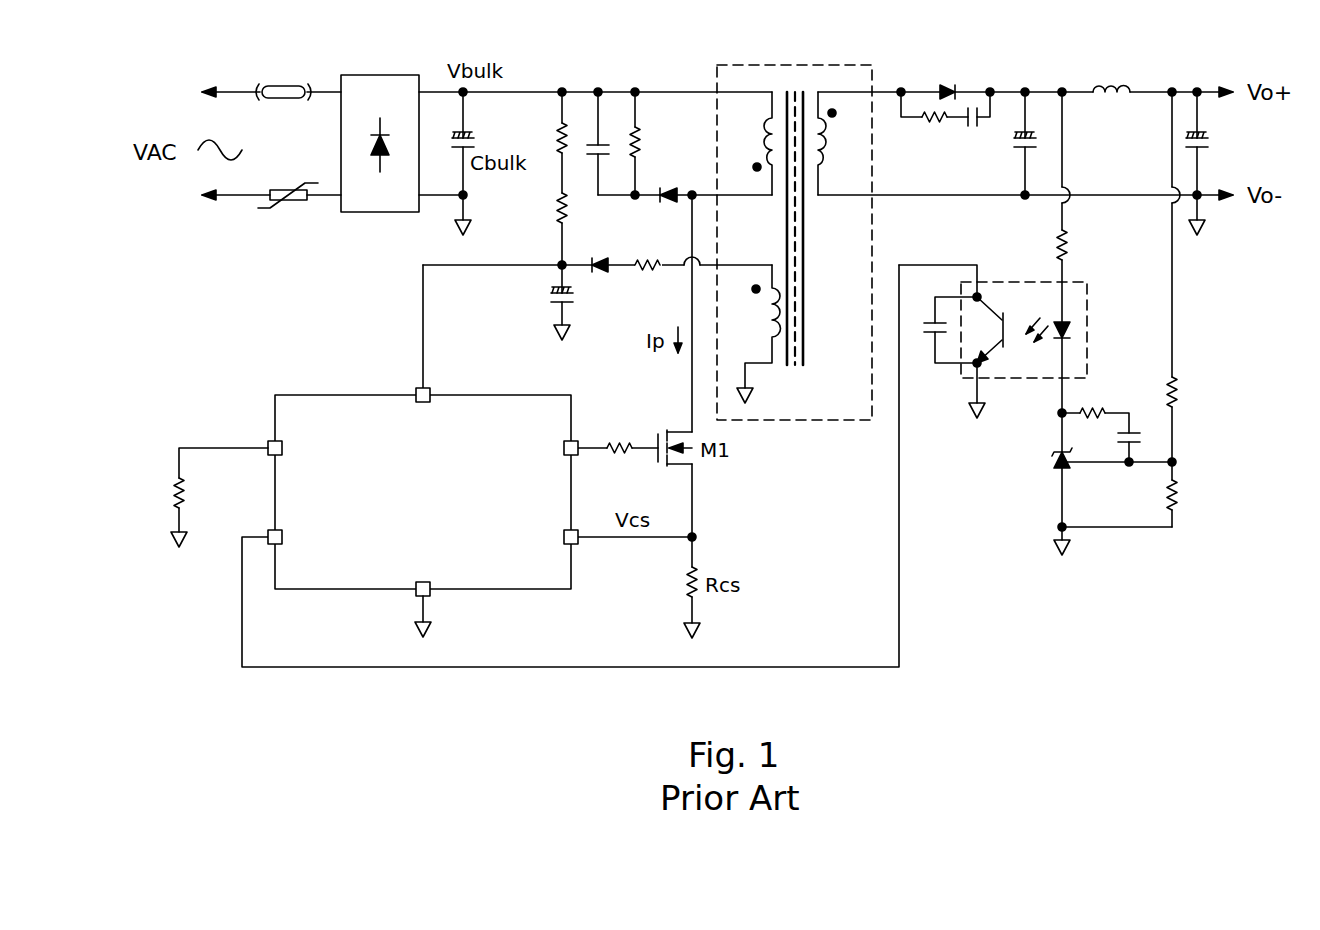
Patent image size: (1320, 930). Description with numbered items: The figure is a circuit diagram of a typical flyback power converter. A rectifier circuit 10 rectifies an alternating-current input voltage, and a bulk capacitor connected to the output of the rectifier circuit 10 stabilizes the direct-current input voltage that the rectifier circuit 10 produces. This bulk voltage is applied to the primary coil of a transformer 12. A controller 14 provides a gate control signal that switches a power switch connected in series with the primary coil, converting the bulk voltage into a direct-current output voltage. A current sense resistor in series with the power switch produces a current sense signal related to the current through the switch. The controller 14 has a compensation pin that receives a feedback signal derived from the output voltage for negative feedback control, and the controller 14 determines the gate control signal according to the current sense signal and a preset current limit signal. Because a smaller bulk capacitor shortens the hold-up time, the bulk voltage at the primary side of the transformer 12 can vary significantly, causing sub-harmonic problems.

The rectifier circuit 10 is at (380, 212).
The transformer 12 is at (872, 249).
The controller 14 is at (345, 395).